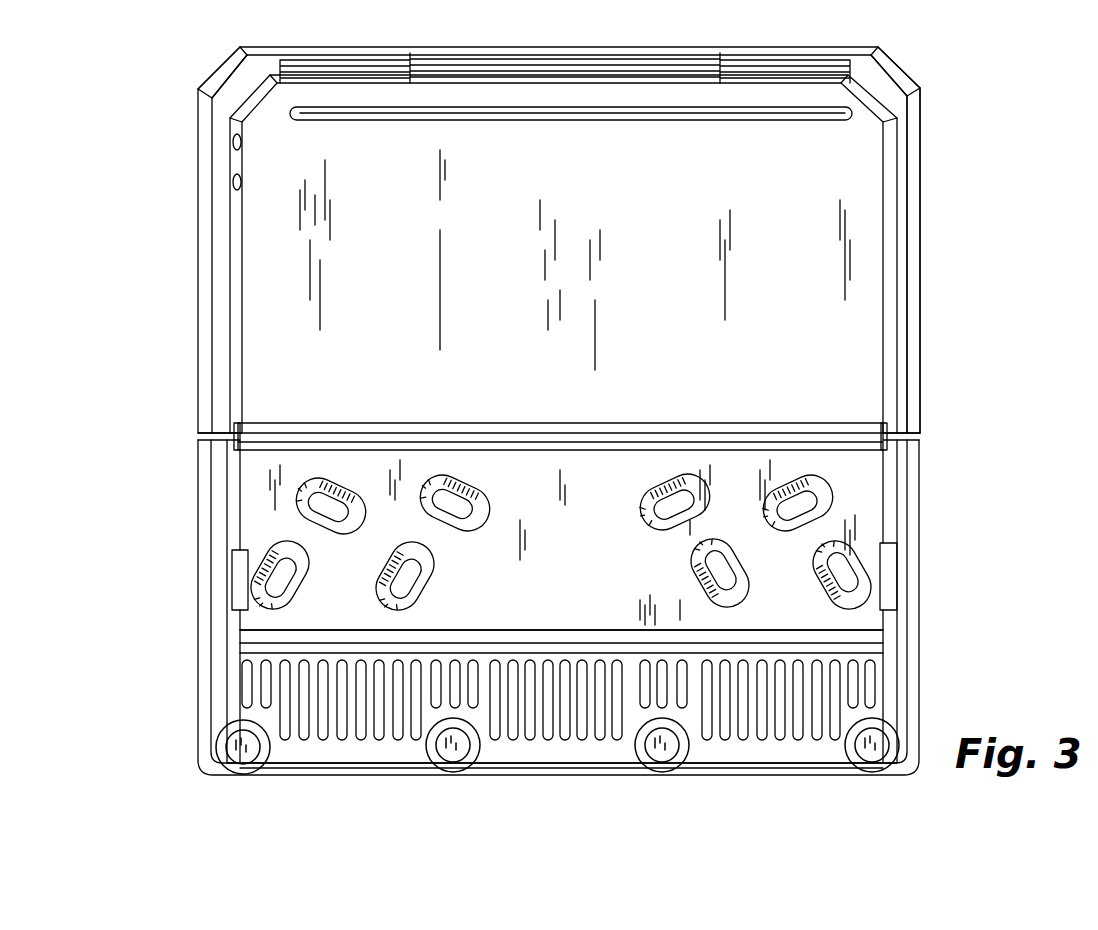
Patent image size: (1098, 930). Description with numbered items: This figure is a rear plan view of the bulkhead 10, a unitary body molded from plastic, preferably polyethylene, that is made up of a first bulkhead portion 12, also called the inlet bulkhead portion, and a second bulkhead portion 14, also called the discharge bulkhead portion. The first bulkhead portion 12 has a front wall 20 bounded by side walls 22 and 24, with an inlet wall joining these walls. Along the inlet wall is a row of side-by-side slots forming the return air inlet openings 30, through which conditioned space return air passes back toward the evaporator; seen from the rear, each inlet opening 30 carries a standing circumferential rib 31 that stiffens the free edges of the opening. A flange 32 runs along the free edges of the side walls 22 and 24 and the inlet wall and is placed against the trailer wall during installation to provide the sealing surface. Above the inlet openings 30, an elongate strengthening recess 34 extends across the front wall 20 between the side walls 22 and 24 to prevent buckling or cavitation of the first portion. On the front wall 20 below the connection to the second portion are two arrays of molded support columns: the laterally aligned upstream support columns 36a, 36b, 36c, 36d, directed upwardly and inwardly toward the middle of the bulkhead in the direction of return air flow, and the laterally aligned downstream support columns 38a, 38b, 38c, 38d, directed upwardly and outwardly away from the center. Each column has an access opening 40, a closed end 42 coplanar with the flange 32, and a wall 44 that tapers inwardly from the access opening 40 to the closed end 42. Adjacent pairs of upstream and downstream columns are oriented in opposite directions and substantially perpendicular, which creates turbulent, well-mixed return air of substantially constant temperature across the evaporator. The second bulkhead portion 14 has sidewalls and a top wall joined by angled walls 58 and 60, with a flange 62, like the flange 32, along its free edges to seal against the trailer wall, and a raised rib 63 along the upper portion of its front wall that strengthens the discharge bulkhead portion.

The bulkhead 10 is at (606, 25).
The first bulkhead portion 12 is at (128, 612).
The second bulkhead portion 14 is at (625, 257).
The front wall 20 is at (578, 558).
The side wall 22 is at (893, 496).
The side wall 24 is at (232, 495).
The return air inlet opening 30 is at (855, 684).
The standing circumferential rib 31 is at (565, 740).
The flange 32 is at (213, 668).
The elongate strengthening recess 34 is at (588, 636).
The upstream support column 36a is at (258, 565).
The upstream support column 36b is at (432, 580).
The upstream support column 36c is at (695, 590).
The upstream support column 36d is at (868, 592).
The downstream support column 38a is at (327, 479).
The downstream support column 38b is at (488, 498).
The downstream support column 38c is at (688, 478).
The downstream support column 38d is at (812, 478).
The access opening 40 is at (450, 478).
The closed end 42 is at (656, 490).
The wall 44 is at (411, 546).
The angled wall 58 is at (262, 88).
The angled wall 60 is at (870, 95).
The flange 62 is at (913, 130).
The raised rib 63 is at (615, 110).